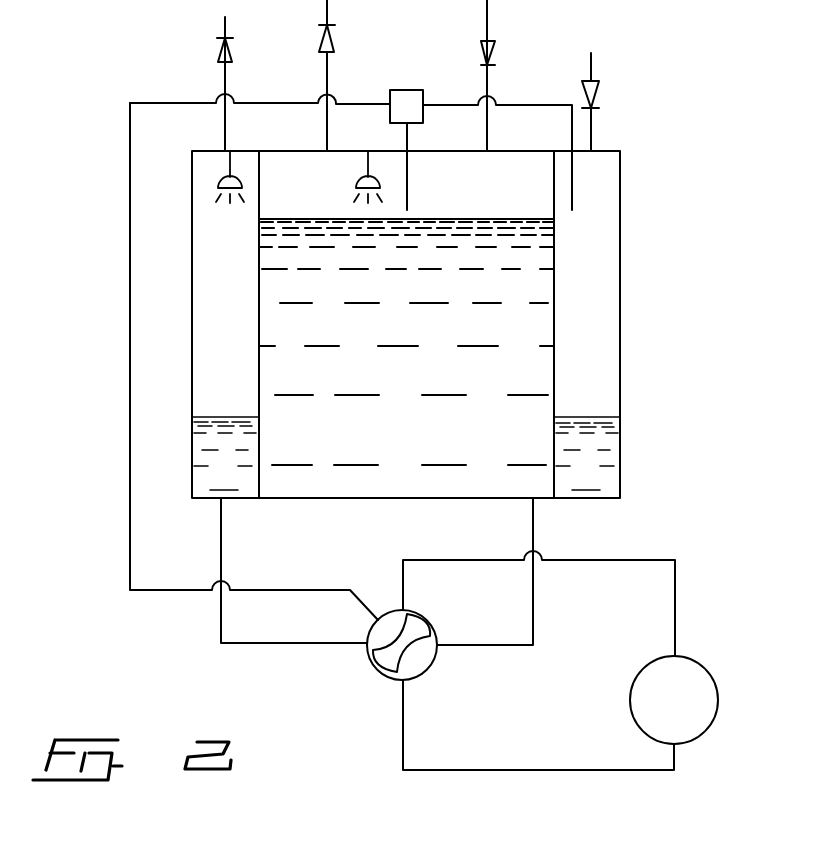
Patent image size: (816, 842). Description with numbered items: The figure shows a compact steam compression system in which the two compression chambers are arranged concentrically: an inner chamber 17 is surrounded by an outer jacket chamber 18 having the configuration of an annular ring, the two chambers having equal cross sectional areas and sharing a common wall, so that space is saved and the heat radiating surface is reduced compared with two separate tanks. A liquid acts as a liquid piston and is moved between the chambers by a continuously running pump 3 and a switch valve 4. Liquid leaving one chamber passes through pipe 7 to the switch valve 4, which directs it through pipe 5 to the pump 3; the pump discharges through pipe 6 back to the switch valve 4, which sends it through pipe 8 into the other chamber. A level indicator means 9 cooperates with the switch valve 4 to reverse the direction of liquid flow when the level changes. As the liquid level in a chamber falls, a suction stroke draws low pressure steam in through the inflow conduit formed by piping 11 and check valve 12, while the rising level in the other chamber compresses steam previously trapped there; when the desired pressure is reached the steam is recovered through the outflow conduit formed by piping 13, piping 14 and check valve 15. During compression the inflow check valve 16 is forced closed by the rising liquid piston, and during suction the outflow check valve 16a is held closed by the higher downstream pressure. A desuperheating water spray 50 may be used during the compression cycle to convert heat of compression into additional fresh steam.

The pump 3 is at (718, 706).
The switch valve 4 is at (372, 668).
The pipe 5 is at (586, 560).
The pipe 6 is at (403, 733).
The pipe 7 is at (249, 645).
The pipe 8 is at (486, 643).
The level indicator means 9 is at (397, 105).
The piping 11 is at (591, 66).
The check valve 12 is at (597, 108).
The piping 13 is at (322, 70).
The piping 14 is at (323, 17).
The check valve 15 is at (334, 42).
The check valve 16 is at (495, 52).
The check valve 16a is at (217, 48).
The inner chamber 17 is at (516, 190).
The outer jacket chamber 18 is at (220, 272).
The desuperheating water spray 50 is at (228, 160).